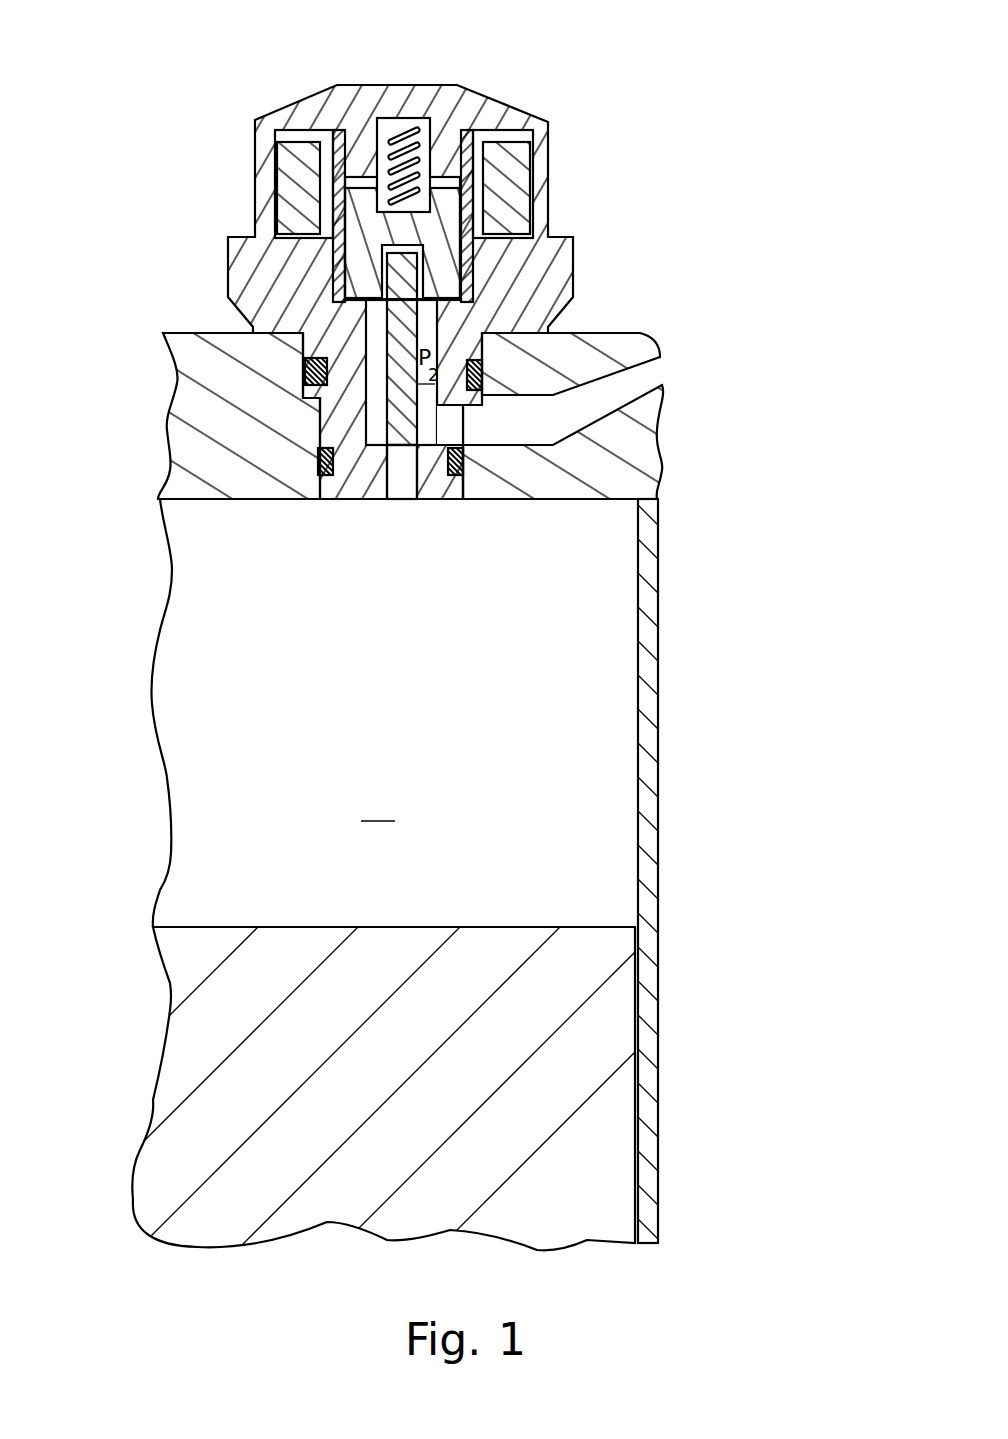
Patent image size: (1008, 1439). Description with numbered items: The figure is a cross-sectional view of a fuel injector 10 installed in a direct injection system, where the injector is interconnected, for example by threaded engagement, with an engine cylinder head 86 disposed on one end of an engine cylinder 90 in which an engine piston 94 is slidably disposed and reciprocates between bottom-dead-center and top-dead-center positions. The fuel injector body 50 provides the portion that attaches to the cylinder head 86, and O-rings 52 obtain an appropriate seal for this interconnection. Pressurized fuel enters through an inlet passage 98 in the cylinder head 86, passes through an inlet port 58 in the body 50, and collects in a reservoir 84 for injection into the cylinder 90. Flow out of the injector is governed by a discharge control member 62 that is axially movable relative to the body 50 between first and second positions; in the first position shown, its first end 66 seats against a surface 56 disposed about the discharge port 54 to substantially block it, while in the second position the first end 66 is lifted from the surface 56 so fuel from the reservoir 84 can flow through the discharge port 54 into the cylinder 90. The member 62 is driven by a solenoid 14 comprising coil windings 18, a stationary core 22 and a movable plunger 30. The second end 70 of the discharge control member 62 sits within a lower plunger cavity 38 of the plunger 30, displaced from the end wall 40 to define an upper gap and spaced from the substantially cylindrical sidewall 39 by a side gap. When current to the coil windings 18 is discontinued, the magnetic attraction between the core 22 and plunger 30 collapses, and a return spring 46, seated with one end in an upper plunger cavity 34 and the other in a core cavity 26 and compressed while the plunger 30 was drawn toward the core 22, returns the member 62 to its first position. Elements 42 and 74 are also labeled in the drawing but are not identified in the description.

The fuel injector 10 is at (496, 257).
The solenoid 14 is at (477, 257).
The coil windings 18 is at (517, 180).
The stationary core 22 is at (400, 258).
The core cavity 26 is at (457, 85).
The movable plunger 30 is at (363, 258).
The upper plunger cavity 34 is at (313, 215).
The lower plunger cavity 38 is at (474, 258).
The cylindrical sidewall 39 is at (396, 250).
The end wall 40 is at (348, 237).
The flux tube 42 is at (350, 128).
The return spring 46 is at (400, 137).
The fuel injector body 50 is at (477, 258).
The O-rings 52 is at (317, 458).
The discharge port 54 is at (397, 498).
The surface 56 is at (380, 497).
The inlet port 58 is at (510, 499).
The discharge control member 62 is at (480, 360).
The first end 66 is at (427, 571).
The second end 70 is at (463, 222).
The seal 74 is at (315, 490).
The reservoir 84 is at (163, 337).
The engine cylinder head 86 is at (463, 462).
The engine cylinder 90 is at (658, 753).
The engine piston 94 is at (537, 1095).
The inlet passage 98 is at (683, 465).